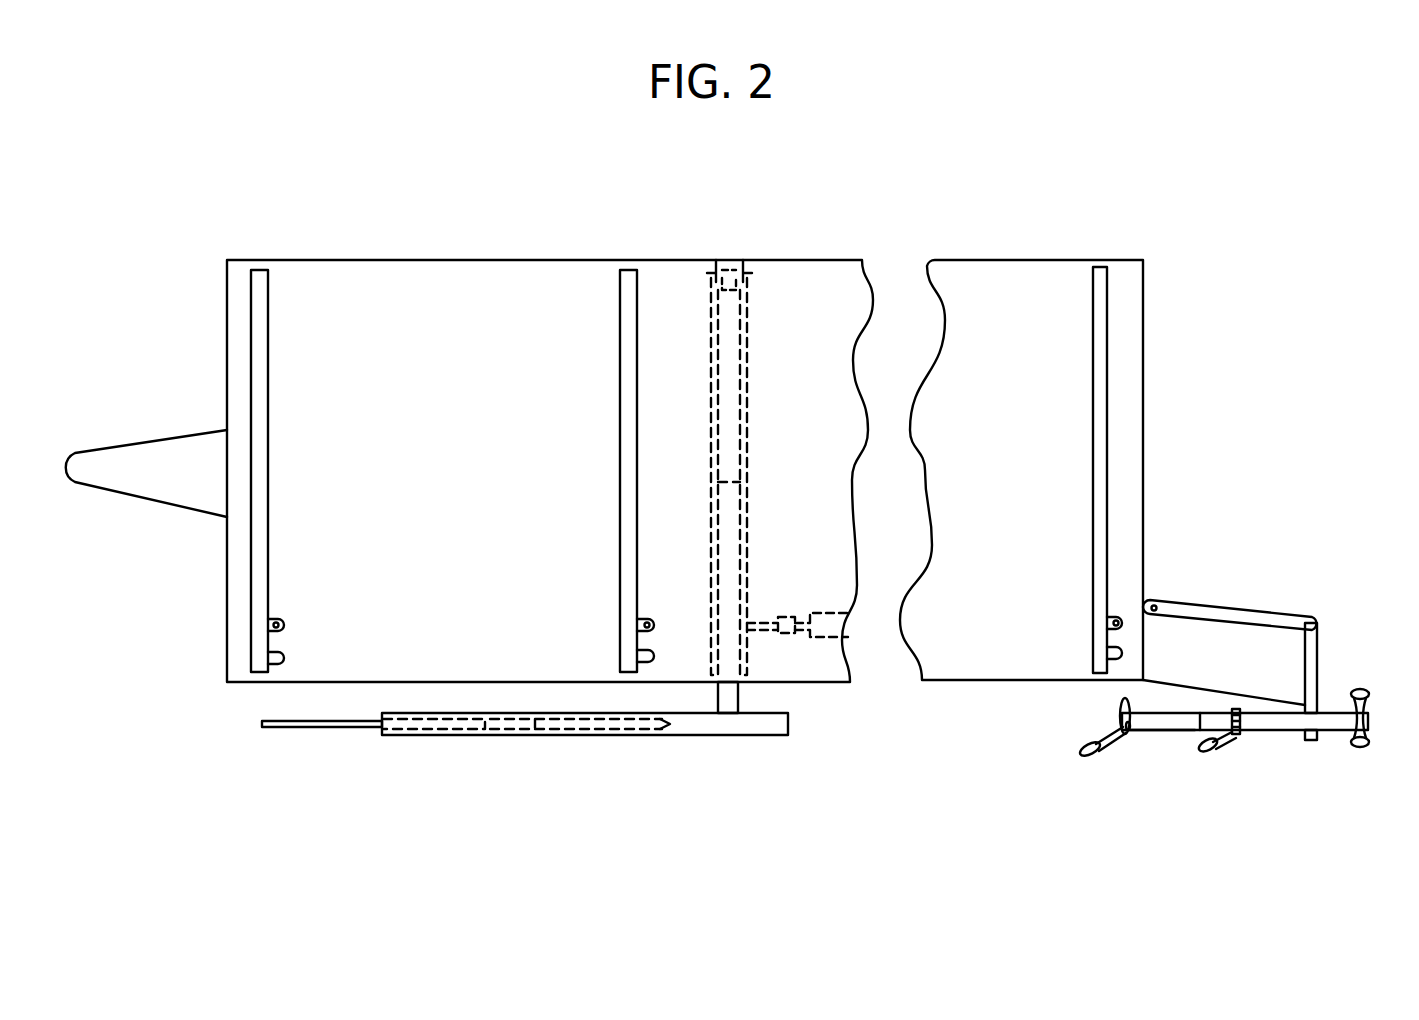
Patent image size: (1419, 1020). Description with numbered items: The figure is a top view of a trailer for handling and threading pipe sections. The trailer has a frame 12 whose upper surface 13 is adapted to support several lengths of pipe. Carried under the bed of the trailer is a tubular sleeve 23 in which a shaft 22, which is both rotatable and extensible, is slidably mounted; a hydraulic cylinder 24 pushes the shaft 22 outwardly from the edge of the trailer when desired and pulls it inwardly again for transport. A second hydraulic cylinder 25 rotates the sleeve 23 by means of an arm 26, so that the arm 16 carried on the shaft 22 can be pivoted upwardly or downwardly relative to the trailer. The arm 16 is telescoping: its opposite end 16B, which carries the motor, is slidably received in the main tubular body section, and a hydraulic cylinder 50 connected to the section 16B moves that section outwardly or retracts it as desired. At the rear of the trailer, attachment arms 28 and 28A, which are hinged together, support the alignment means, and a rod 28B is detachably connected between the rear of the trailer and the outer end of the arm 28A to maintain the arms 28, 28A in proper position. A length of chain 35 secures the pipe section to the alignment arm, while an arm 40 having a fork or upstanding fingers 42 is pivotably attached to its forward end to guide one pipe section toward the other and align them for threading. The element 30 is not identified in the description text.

The frame 12 is at (449, 260).
The upper surface 13 is at (315, 342).
The arm 16 is at (517, 745).
The end of arm 16B is at (355, 727).
The shaft 22 is at (740, 702).
The tubular sleeve 23 is at (711, 569).
The hydraulic cylinder 24 is at (742, 466).
The hydraulic cylinder 25 is at (818, 612).
The arm 26 is at (748, 632).
The attachment arm 28 is at (1212, 606).
The attachment arm 28A is at (1318, 656).
The rod 28B is at (1208, 688).
The actuating shaft 30 is at (1261, 740).
The chain 35 is at (1233, 740).
The arm 40 is at (1165, 722).
The upstanding fingers 42 is at (1120, 710).
The hydraulic cylinder 50 is at (618, 732).